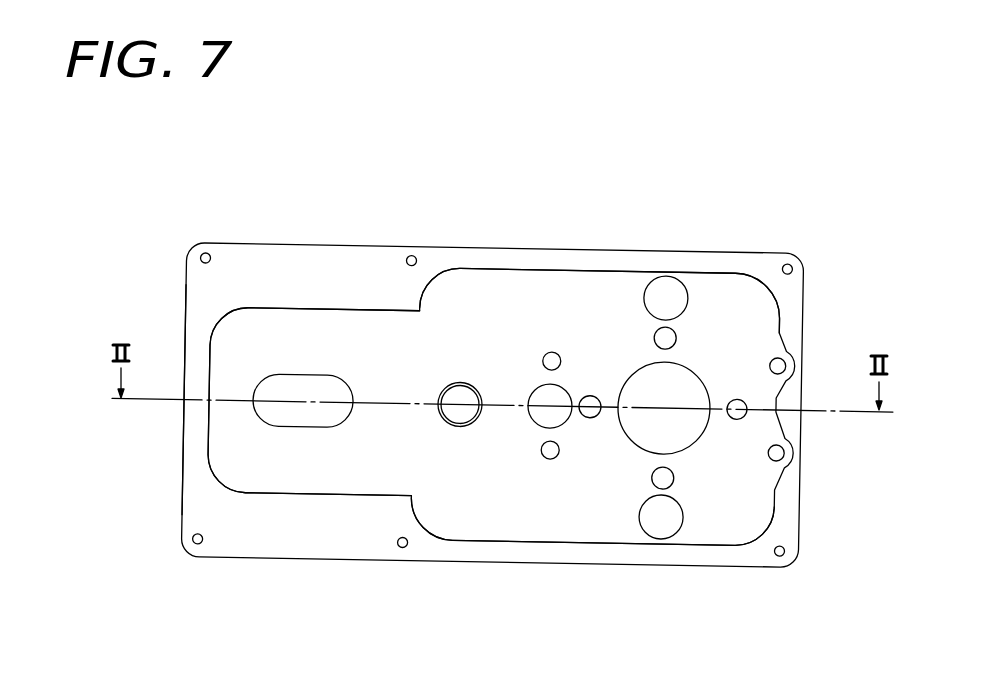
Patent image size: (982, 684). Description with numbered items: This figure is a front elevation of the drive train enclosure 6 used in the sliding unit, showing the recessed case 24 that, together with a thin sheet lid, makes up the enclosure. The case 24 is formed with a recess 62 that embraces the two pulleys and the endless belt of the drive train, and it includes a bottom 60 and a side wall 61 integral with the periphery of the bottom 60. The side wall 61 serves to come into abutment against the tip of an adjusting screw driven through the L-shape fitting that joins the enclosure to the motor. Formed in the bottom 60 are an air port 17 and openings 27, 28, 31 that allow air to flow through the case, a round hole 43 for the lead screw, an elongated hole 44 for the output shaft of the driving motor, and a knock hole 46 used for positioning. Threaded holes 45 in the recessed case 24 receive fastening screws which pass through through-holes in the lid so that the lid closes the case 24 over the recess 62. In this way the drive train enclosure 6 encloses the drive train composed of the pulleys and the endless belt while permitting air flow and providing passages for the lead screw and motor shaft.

The drive train enclosure 6 is at (437, 257).
The air port 17 is at (452, 418).
The case 24 is at (589, 262).
The opening 27 is at (538, 412).
The opening 28 is at (678, 290).
The opening 31 is at (652, 530).
The hole 43 is at (687, 440).
The elongated hole 44 is at (300, 417).
The threaded hole 45 is at (202, 253).
The knock hole 46 is at (672, 338).
The bottom 60 is at (368, 345).
The side wall 61 is at (193, 422).
The recess 62 is at (500, 315).